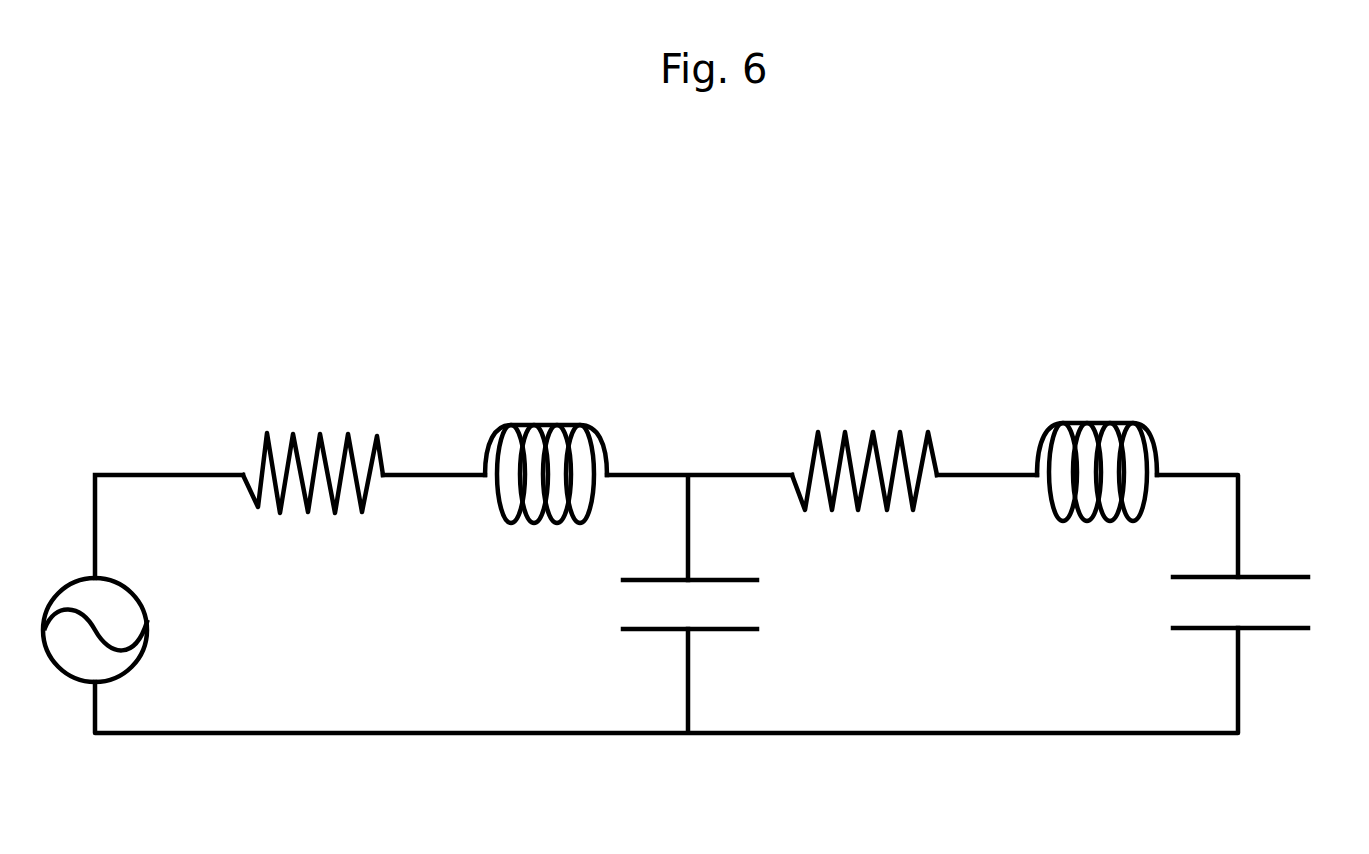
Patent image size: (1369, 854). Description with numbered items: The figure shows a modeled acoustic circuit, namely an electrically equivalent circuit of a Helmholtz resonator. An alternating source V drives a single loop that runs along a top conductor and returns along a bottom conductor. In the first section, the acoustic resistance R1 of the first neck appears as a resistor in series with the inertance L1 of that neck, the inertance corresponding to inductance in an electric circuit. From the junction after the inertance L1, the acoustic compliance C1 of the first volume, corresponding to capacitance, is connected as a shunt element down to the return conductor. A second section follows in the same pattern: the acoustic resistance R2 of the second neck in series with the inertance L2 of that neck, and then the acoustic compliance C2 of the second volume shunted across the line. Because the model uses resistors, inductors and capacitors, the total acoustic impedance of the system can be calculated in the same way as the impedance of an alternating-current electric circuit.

The acoustic resistance R1 is at (313, 442).
The inertance L1 is at (546, 447).
The acoustic compliance C1 is at (716, 604).
The acoustic resistance R2 is at (864, 438).
The inertance L2 is at (1097, 445).
The acoustic compliance C2 is at (1267, 604).
The AC voltage source V is at (95, 630).